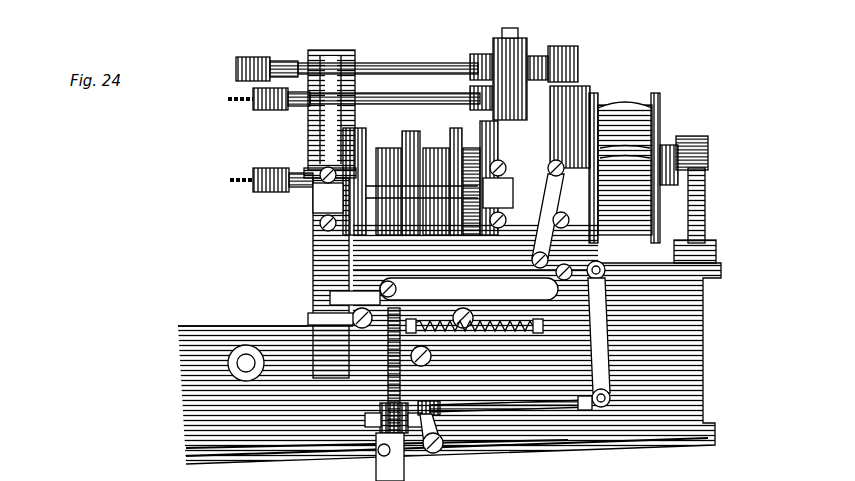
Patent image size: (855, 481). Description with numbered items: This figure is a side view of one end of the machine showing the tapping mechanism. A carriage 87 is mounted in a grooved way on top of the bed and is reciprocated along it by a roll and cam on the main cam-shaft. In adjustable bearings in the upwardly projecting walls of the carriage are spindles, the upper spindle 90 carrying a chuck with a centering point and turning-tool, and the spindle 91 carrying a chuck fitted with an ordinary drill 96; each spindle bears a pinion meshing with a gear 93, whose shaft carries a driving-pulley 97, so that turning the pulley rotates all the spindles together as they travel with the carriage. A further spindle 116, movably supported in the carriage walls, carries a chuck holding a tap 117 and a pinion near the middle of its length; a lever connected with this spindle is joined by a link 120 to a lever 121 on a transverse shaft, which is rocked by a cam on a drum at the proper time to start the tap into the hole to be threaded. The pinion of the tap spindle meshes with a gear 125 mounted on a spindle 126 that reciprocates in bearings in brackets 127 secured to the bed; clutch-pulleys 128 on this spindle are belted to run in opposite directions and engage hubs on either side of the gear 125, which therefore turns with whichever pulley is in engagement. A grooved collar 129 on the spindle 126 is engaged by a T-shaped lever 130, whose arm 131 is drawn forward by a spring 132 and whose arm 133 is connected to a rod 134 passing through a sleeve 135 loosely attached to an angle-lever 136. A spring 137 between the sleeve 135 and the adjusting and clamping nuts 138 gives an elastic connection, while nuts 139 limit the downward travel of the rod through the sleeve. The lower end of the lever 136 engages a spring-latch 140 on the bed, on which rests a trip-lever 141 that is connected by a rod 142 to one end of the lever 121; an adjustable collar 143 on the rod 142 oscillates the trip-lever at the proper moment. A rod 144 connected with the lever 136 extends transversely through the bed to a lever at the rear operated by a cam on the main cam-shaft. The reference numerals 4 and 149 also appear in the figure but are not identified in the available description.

The base hole 4 is at (200, 383).
The carriage 87 is at (300, 238).
The upper spindle 90 is at (375, 58).
The spindle 91 is at (418, 84).
The gear 93 is at (603, 97).
The drill 96 is at (232, 96).
The driving-pulley 97 is at (644, 90).
The spindle 116 is at (278, 160).
The tap 117 is at (222, 170).
The link 120 is at (588, 252).
The lever 121 is at (690, 300).
The gear 125 is at (403, 120).
The spindle 126 is at (300, 200).
The brackets 127 is at (413, 195).
The clutch-pulleys 128 is at (428, 140).
The grooved collar 129 is at (583, 152).
The T-shaped lever 130 is at (542, 222).
The arm 131 is at (553, 274).
The spring 132 is at (474, 342).
The arm 133 is at (469, 303).
The rod 134 is at (322, 288).
The sleeve 135 is at (300, 310).
The angle-lever 136 is at (372, 445).
The spring 137 is at (357, 410).
The adjusting and clamping nuts 138 is at (368, 448).
The nuts 139 is at (300, 306).
The spring-latch 140 is at (225, 16).
The trip-lever 141 is at (455, 410).
The rod 142 is at (590, 400).
The adjustable collar 143 is at (436, 436).
The rod 144 is at (420, 410).
The drum groove 149 is at (590, 200).